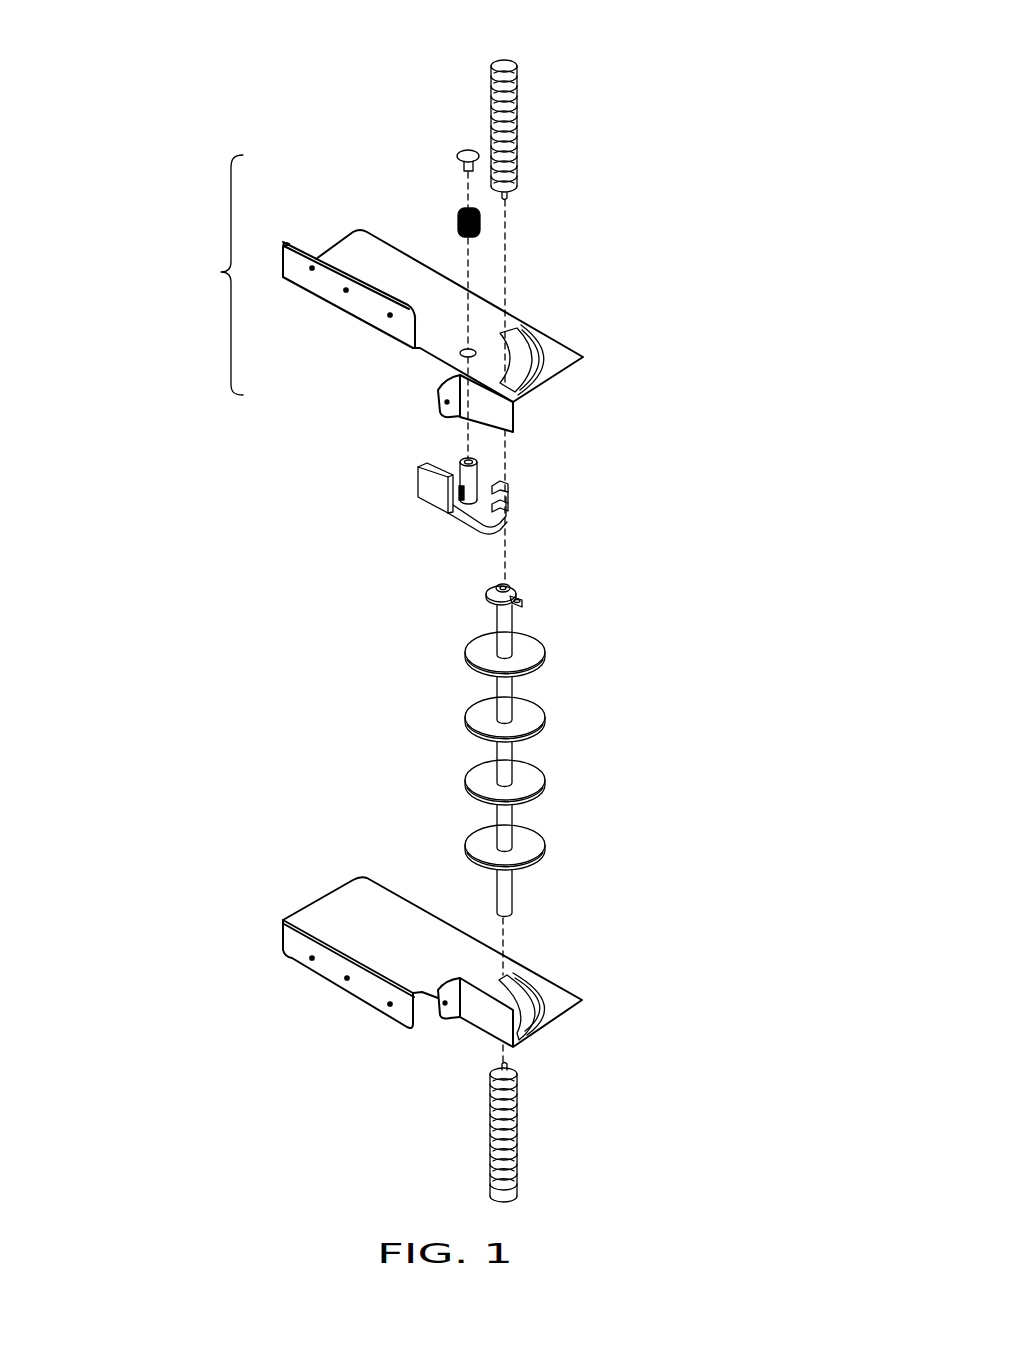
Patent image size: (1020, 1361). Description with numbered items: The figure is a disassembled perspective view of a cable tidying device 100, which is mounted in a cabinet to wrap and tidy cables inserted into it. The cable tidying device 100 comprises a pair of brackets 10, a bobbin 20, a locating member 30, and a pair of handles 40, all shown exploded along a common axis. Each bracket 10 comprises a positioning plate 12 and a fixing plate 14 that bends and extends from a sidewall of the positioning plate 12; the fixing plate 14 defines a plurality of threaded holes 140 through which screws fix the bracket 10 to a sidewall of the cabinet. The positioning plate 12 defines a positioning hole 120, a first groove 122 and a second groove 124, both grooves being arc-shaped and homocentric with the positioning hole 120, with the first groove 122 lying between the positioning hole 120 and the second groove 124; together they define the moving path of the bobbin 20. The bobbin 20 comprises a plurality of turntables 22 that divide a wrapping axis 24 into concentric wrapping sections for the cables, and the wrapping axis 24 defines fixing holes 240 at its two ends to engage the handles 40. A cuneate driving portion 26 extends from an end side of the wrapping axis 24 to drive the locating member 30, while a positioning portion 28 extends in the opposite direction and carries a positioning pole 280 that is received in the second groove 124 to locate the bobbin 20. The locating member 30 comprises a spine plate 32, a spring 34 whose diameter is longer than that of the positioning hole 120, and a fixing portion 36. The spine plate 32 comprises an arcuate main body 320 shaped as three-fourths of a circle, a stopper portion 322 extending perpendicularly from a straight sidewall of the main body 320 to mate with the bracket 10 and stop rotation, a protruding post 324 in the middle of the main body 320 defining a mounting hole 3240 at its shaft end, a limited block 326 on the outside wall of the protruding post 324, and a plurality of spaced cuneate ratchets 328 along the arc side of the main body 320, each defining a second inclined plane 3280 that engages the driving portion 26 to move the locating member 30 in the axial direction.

The cable tidying device 100 is at (487, 24).
The bracket 10 is at (318, 1034).
The positioning plate 12 is at (325, 912).
The fixing plate 14 is at (358, 303).
The threaded holes 140 is at (311, 270).
The positioning hole 120 is at (461, 355).
The first groove 122 is at (512, 346).
The second groove 124 is at (537, 367).
The bobbin 20 is at (412, 674).
The turntables 22 is at (530, 778).
The wrapping axis 24 is at (503, 697).
The driving portion 26 is at (490, 593).
The fixing holes 240 is at (500, 583).
The positioning portion 28 is at (510, 587).
The positioning pole 280 is at (522, 601).
The locating member 30 is at (378, 306).
The spine plate 32 is at (407, 455).
The main body 320 is at (473, 508).
The stopper portion 322 is at (428, 482).
The protruding post 324 is at (470, 475).
The mounting hole 3240 is at (476, 461).
The limited block 326 is at (459, 495).
The ratchets 328 is at (508, 488).
The second inclined plane 3280 is at (508, 508).
The spring 34 is at (457, 220).
The fixing portion 36 is at (456, 161).
The handles 40 is at (518, 133).